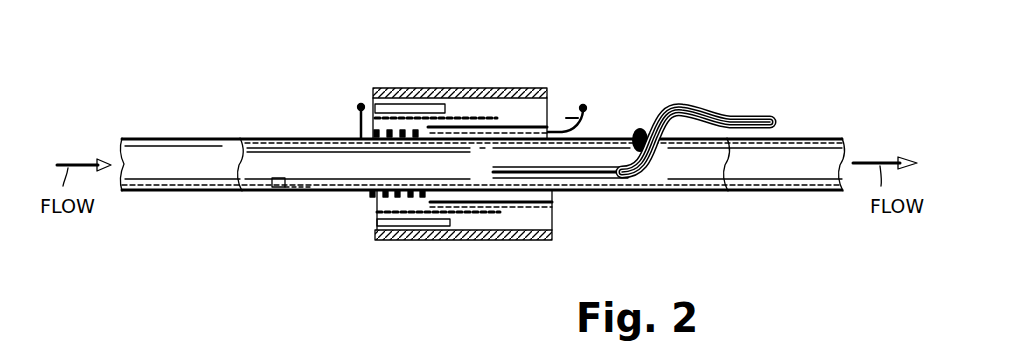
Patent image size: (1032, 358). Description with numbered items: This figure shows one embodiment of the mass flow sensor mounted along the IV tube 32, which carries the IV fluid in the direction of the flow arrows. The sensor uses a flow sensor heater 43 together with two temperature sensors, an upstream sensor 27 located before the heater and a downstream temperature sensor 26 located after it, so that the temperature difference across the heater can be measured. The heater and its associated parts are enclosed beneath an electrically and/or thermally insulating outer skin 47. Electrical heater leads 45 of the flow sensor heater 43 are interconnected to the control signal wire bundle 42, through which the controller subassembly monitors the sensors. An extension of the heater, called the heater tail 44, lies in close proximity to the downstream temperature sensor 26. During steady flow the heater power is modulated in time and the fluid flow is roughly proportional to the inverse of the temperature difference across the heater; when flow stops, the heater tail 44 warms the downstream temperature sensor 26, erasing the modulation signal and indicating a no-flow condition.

The downstream temperature sensor 26 is at (508, 153).
The upstream sensor 27 is at (270, 190).
The IV tube 32 is at (153, 192).
The control signal wire bundle 42 is at (737, 117).
The flow sensor heater 43 is at (360, 198).
The heater tail 44 is at (577, 119).
The electrical heater leads 45 is at (357, 127).
The outer skin 47 is at (433, 87).